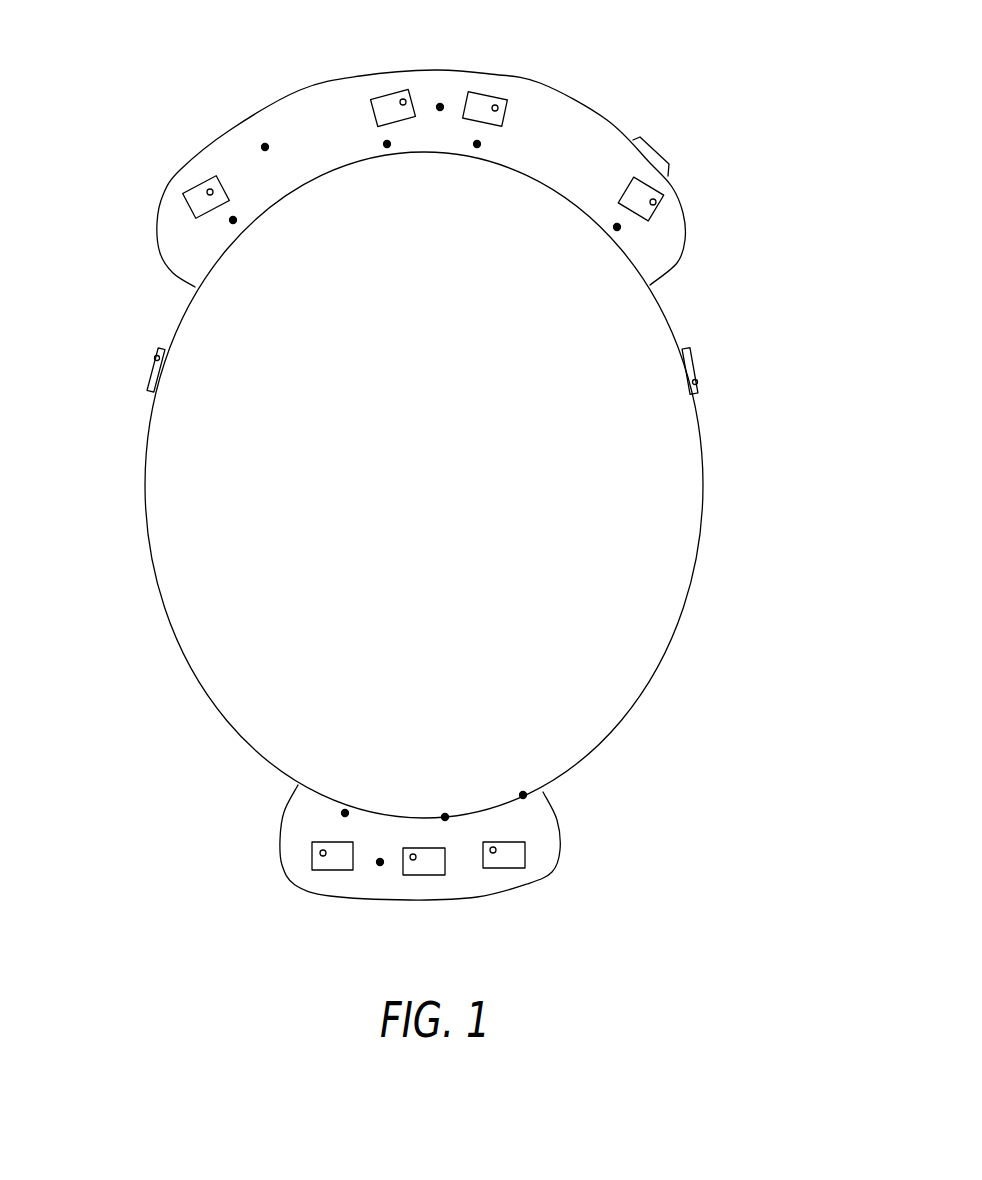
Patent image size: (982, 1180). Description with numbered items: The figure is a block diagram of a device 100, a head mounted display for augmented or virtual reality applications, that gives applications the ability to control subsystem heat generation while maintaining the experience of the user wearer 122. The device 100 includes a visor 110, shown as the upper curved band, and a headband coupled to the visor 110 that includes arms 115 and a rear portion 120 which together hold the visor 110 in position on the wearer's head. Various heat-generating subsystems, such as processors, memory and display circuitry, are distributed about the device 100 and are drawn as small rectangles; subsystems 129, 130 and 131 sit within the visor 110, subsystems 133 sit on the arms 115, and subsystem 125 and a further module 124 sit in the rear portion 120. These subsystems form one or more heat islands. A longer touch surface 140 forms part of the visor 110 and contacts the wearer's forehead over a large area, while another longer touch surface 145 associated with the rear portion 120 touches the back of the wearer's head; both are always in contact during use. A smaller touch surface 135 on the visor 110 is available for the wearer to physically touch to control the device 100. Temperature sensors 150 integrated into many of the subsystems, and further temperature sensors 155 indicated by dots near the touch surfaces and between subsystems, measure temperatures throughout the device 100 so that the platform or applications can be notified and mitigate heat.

The device 100 is at (693, 60).
The visor 110 is at (605, 121).
The arms 115 is at (145, 487).
The rear portion 120 is at (558, 865).
The user wearer 122 is at (610, 447).
The module in bottom portion 124 is at (493, 870).
The subsystem 125 is at (320, 870).
The subsystem 129 is at (197, 186).
The subsystem 130 is at (505, 110).
The subsystem 131 is at (680, 228).
The subsystem 133 is at (152, 377).
The touch surface 135 is at (650, 148).
The longer touch surface 140 is at (312, 177).
The longer touch surface 145 is at (427, 813).
The temperature sensors 150 is at (208, 194).
The temperature sensors 155 is at (265, 146).